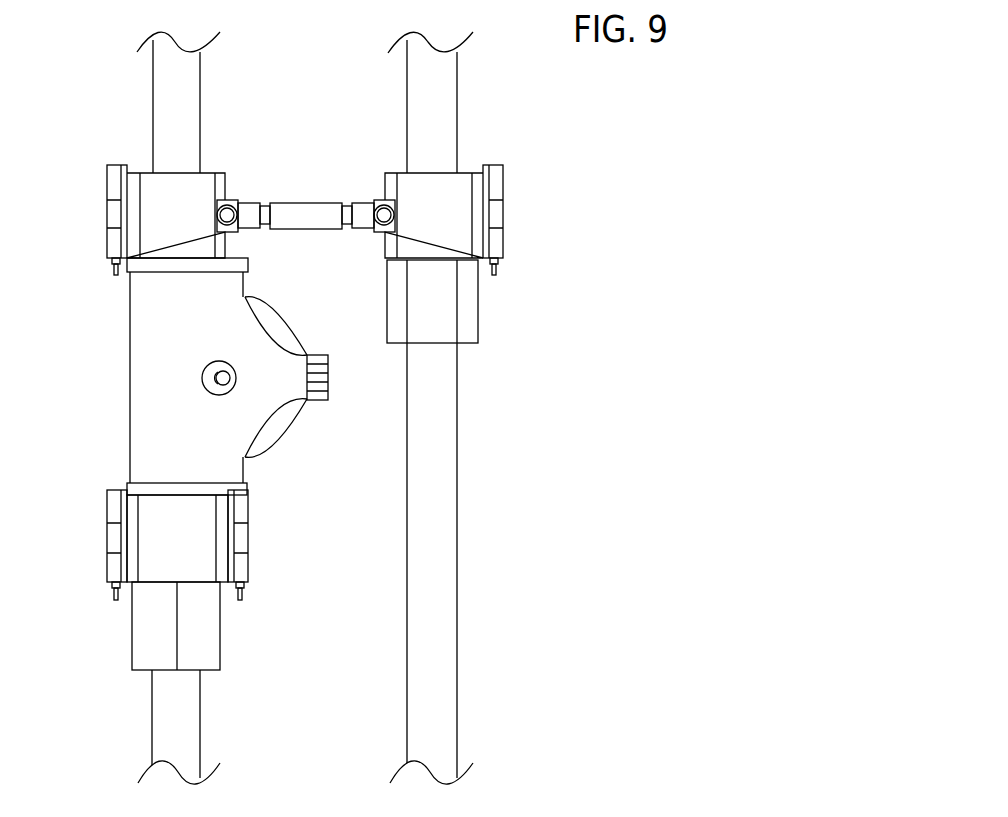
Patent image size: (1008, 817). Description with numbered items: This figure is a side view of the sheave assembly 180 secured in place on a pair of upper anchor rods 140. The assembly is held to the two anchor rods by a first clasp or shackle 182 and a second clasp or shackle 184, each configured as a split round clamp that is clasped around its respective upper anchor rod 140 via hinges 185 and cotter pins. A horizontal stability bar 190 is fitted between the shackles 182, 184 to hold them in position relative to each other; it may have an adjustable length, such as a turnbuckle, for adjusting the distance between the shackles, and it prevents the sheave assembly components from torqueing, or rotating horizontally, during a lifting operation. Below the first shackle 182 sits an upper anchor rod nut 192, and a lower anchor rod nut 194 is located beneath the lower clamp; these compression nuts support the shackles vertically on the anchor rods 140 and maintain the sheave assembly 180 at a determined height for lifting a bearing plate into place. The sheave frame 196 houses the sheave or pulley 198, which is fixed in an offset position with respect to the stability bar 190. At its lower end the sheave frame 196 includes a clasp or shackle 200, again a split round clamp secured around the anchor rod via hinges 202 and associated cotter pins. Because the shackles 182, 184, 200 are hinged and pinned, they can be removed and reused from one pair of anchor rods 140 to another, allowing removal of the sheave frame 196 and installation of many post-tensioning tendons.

The upper anchor rod 140 is at (177, 715).
The sheave assembly 180 is at (508, 127).
The first clasp or shackle 182 is at (455, 233).
The second clasp or shackle 184 is at (197, 233).
The hinge 185 is at (117, 215).
The horizontal stability bar 190 is at (305, 212).
The upper anchor rod nut 192 is at (437, 300).
The lower anchor rod nut 194 is at (200, 630).
The sheave frame 196 is at (206, 344).
The sheave or pulley 198 is at (272, 432).
The clasp or shackle 200 is at (200, 555).
The hinge 202 is at (117, 542).